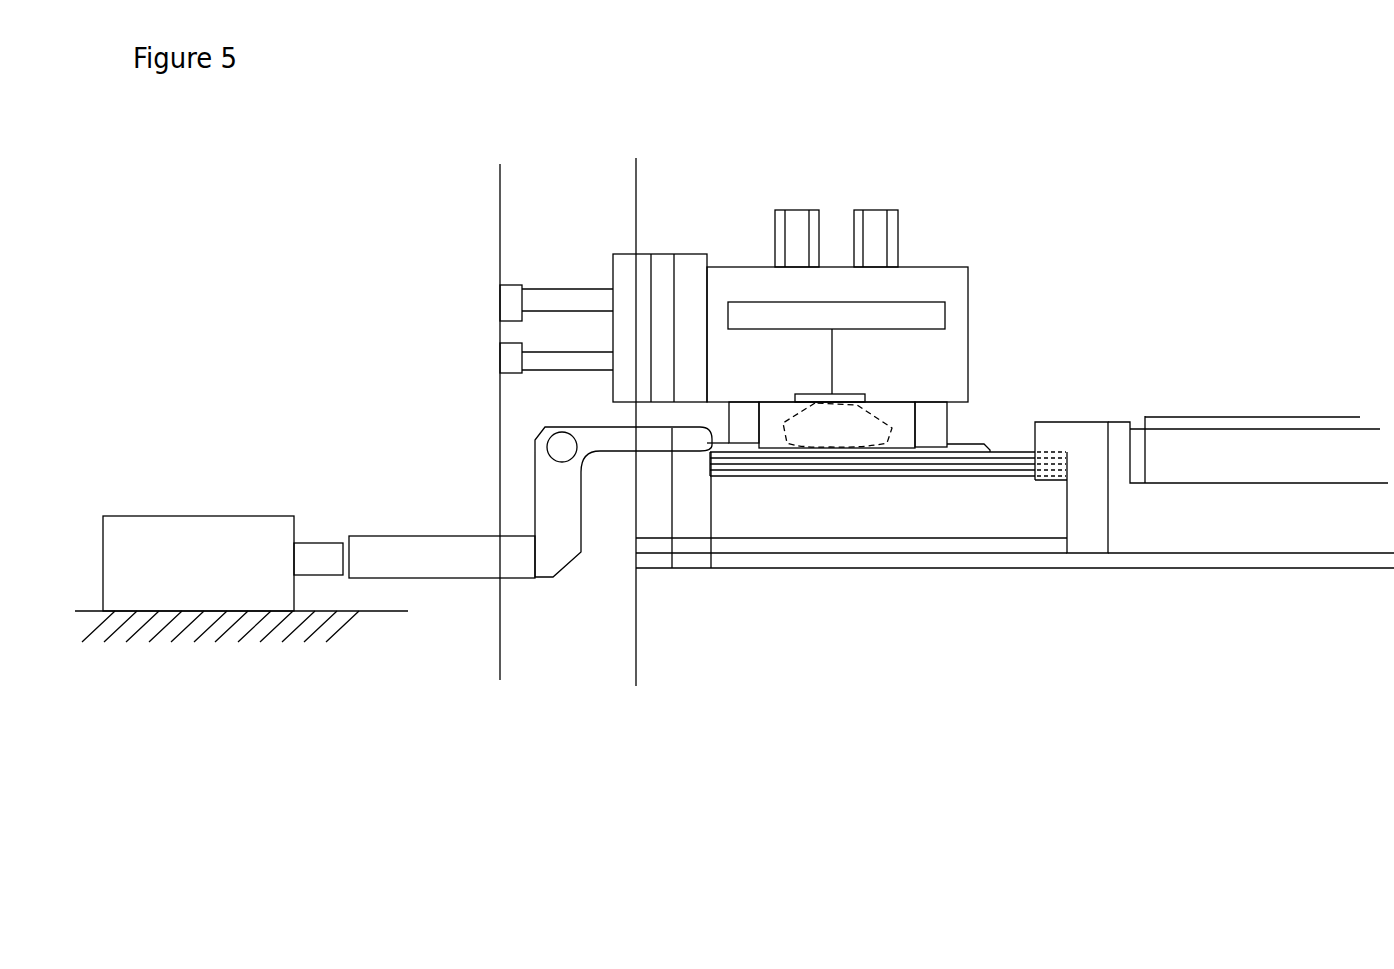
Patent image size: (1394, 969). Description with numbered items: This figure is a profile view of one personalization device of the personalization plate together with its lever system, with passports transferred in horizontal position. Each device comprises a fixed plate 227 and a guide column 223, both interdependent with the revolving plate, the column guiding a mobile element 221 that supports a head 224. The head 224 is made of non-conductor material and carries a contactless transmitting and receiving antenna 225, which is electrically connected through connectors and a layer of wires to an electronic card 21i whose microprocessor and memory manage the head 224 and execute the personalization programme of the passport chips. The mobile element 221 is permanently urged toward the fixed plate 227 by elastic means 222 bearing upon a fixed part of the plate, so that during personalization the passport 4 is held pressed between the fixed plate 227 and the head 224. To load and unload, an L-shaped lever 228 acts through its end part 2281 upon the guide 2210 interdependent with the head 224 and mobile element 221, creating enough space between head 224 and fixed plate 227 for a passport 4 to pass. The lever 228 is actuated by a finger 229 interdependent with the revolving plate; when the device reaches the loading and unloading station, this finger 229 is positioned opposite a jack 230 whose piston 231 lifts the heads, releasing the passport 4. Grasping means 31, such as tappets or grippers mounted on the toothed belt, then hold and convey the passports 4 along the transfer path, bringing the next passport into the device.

The jack 230 is at (227, 562).
The piston 231 is at (310, 560).
The finger 229 is at (448, 562).
The L-shaped lever 228 is at (560, 533).
The guide column 223 is at (658, 267).
The mobile element 221 is at (938, 280).
The elastic means 222 is at (879, 209).
The electronic card 21i is at (937, 309).
The head 224 is at (897, 412).
The transmitting and receiving antenna 225 is at (880, 420).
The passport 4 is at (978, 447).
The end part 2281 is at (700, 437).
The guide 2210 is at (672, 568).
The fixed plate 227 is at (950, 508).
The grasping means 31 is at (1057, 435).